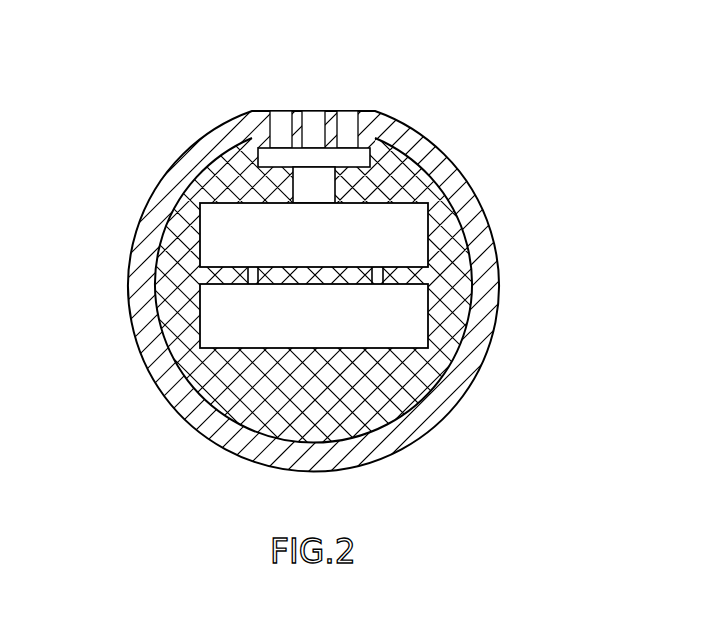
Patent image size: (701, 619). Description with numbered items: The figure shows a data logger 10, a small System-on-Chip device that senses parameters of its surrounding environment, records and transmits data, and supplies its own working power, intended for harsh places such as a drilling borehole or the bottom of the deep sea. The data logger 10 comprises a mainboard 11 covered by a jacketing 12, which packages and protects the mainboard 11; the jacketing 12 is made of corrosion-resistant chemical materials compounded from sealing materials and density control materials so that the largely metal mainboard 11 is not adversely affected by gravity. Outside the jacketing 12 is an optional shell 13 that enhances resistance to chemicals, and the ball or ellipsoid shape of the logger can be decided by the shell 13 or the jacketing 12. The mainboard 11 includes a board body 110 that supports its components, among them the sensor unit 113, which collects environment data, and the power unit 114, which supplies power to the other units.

The data logger 10 is at (350, 309).
The mainboard 11 is at (220, 250).
The jacketing 12 is at (228, 375).
The shell 13 is at (212, 420).
The board body 110 is at (407, 239).
The sensor unit 113 is at (343, 158).
The power unit 114 is at (400, 320).